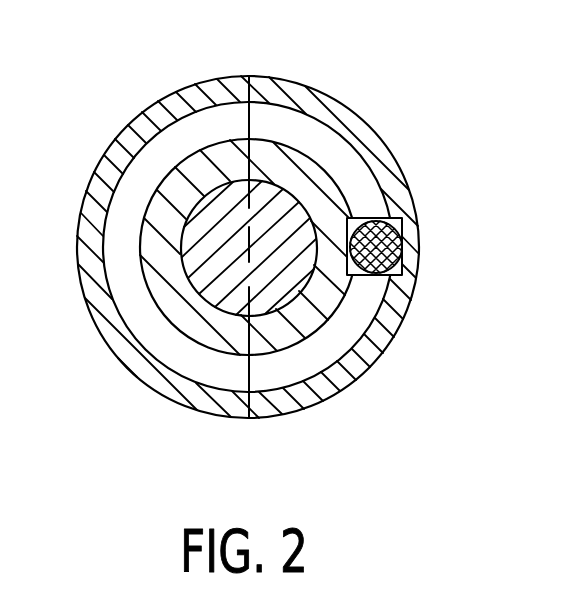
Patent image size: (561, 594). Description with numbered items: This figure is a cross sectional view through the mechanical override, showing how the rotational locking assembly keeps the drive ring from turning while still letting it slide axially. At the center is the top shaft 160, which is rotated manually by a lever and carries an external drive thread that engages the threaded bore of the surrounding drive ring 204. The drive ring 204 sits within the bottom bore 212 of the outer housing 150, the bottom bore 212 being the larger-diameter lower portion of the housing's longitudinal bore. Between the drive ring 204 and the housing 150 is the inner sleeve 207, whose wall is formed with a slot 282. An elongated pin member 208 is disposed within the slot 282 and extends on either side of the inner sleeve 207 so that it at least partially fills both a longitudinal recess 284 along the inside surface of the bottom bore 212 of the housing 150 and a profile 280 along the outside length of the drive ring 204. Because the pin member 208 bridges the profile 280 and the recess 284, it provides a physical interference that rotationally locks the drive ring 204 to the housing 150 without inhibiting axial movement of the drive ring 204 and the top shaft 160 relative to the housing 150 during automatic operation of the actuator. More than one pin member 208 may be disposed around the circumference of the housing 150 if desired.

The outer housing 150 is at (368, 144).
The top shaft 160 is at (277, 217).
The drive ring 204 is at (307, 323).
The inner sleeve 207 is at (212, 372).
The pin member 208 is at (398, 243).
The bottom bore 212 is at (127, 295).
The profile 280 is at (398, 150).
The slot 282 is at (392, 216).
The longitudinal recess 284 is at (395, 300).